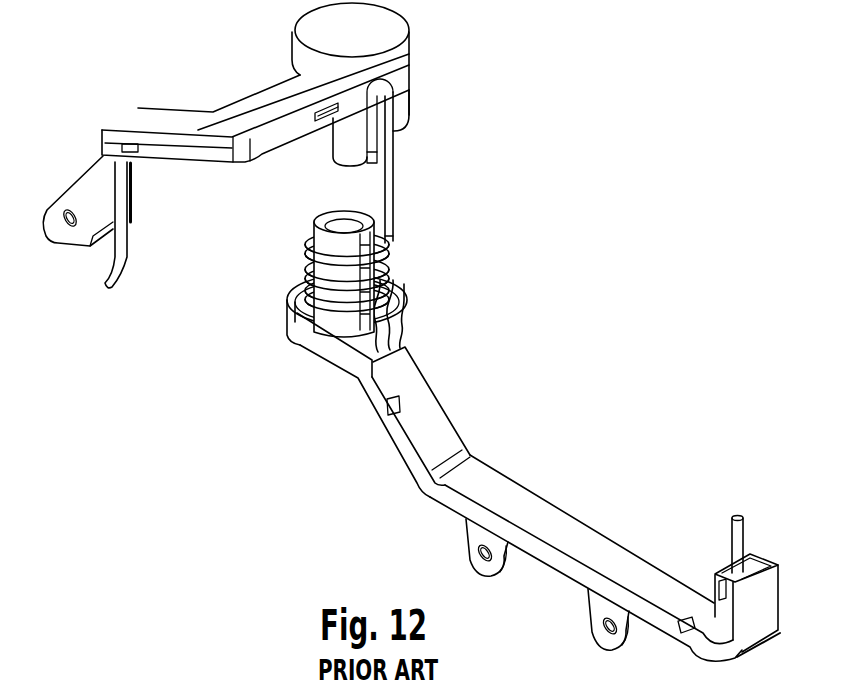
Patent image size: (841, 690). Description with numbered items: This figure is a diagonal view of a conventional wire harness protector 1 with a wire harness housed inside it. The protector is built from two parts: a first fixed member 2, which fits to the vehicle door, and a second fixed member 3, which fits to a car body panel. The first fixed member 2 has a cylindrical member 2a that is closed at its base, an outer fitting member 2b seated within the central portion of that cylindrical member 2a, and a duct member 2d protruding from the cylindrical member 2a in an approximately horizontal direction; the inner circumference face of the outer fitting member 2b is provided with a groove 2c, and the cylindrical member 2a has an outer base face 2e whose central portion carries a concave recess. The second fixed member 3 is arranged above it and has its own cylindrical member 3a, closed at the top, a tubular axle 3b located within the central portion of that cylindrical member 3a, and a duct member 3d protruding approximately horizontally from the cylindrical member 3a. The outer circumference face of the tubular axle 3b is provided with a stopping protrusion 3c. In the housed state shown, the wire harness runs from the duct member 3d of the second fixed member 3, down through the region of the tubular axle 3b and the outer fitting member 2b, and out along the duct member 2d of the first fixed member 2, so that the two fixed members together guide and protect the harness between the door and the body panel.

The wire harness protector 1 is at (478, 196).
The first fixed member 2 is at (513, 487).
The cylindrical member 2a is at (298, 325).
The outer fitting member 2b is at (343, 281).
The groove 2c is at (393, 243).
The duct member 2d is at (620, 546).
The outer base face 2e is at (302, 346).
The second fixed member 3 is at (283, 144).
The cylindrical member 3a is at (413, 83).
The tubular axle 3b is at (338, 144).
The stopping protrusion 3c is at (376, 156).
The duct member 3d is at (280, 80).